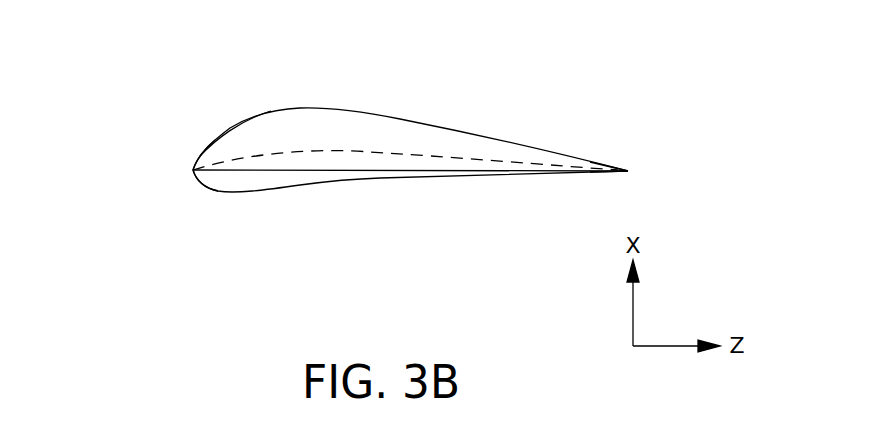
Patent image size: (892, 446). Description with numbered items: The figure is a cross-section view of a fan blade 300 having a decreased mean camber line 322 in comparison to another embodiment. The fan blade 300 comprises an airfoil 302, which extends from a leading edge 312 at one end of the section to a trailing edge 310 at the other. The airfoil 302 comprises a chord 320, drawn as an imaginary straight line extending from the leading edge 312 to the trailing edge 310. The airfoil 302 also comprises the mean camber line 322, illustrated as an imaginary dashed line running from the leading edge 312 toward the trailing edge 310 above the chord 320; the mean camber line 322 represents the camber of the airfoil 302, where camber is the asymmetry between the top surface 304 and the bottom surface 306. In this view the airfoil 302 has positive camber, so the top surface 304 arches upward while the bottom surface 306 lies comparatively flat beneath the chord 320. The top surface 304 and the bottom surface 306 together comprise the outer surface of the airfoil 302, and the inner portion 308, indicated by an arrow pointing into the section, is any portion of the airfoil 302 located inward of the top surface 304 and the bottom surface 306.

The fan blade 300 is at (412, 136).
The airfoil 302 is at (458, 128).
The top surface 304 is at (271, 109).
The bottom surface 306 is at (372, 179).
The inner portion 308 is at (326, 122).
The trailing edge 310 is at (627, 170).
The leading edge 312 is at (193, 170).
The chord 320 is at (277, 170).
The mean camber line 322 is at (363, 152).